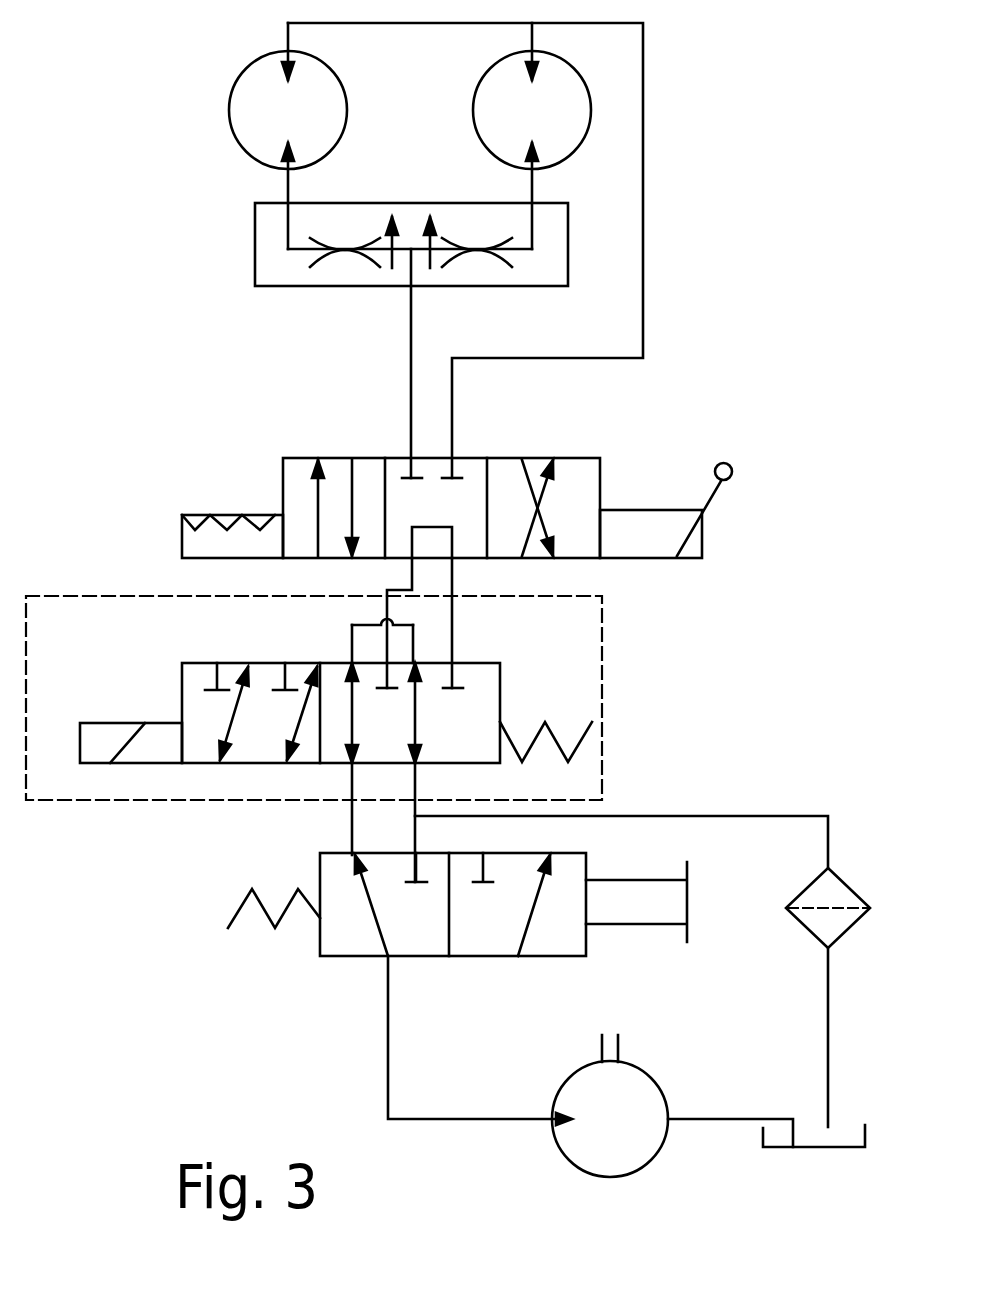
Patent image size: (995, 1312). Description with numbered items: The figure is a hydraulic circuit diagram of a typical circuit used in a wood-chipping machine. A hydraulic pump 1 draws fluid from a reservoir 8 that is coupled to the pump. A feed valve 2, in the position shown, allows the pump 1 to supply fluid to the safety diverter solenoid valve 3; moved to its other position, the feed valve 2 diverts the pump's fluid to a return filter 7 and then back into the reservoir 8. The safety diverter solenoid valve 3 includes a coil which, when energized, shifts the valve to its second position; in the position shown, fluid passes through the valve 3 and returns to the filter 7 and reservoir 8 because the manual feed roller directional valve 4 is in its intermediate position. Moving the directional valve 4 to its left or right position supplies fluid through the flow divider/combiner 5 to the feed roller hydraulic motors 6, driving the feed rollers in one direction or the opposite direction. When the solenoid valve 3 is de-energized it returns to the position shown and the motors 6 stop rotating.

The hydraulic pump 1 is at (582, 1174).
The feed valve 2 is at (310, 943).
The safety diverter solenoid valve 3 is at (98, 718).
The manual feed roller directional valve 4 is at (180, 548).
The flow divider/combiner 5 is at (247, 255).
The feed roller hydraulic motors 6 is at (240, 150).
The return filter 7 is at (813, 942).
The reservoir 8 is at (790, 1150).